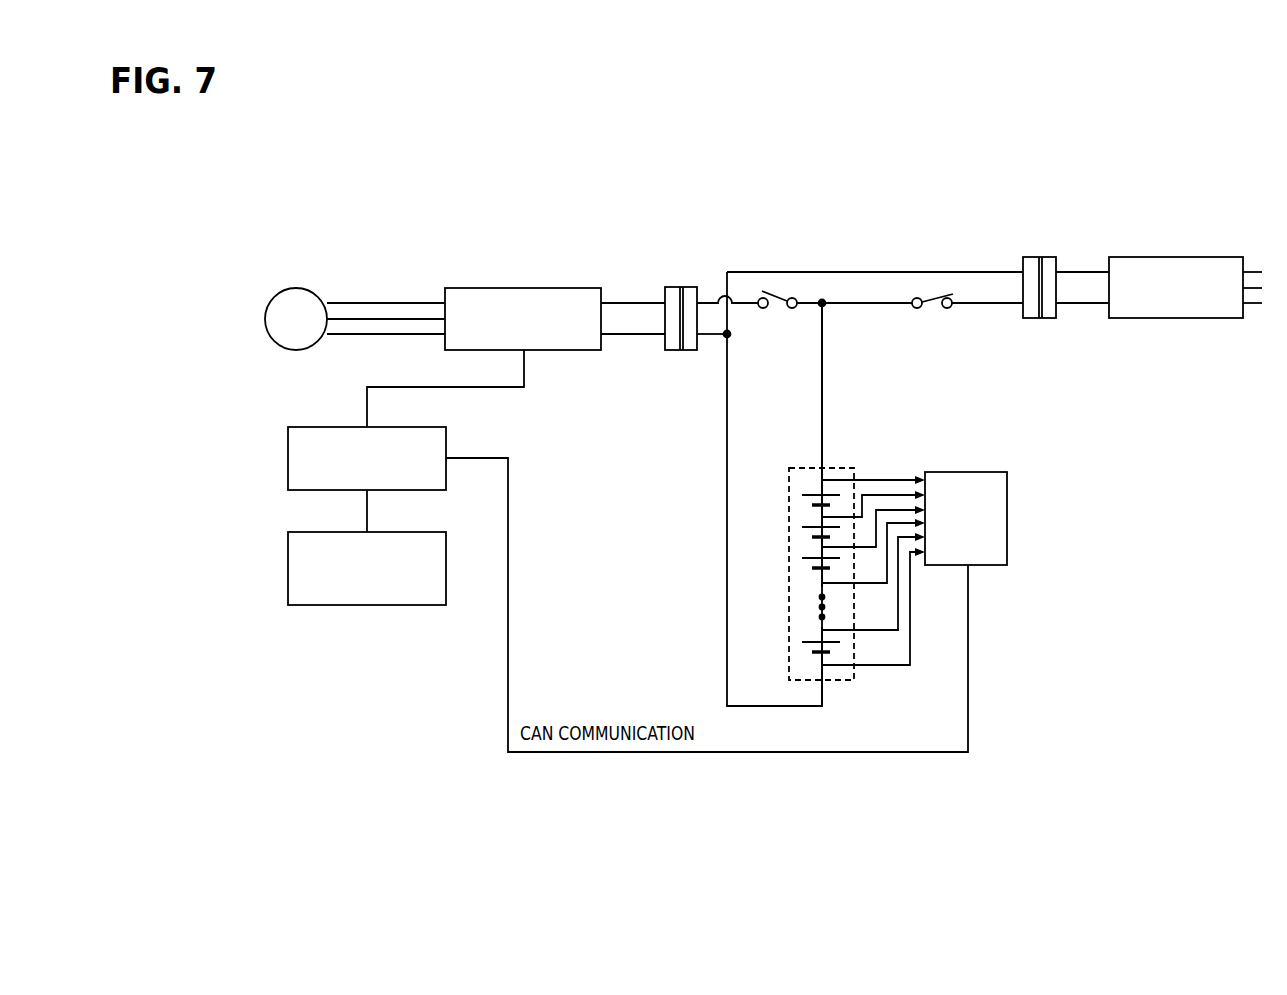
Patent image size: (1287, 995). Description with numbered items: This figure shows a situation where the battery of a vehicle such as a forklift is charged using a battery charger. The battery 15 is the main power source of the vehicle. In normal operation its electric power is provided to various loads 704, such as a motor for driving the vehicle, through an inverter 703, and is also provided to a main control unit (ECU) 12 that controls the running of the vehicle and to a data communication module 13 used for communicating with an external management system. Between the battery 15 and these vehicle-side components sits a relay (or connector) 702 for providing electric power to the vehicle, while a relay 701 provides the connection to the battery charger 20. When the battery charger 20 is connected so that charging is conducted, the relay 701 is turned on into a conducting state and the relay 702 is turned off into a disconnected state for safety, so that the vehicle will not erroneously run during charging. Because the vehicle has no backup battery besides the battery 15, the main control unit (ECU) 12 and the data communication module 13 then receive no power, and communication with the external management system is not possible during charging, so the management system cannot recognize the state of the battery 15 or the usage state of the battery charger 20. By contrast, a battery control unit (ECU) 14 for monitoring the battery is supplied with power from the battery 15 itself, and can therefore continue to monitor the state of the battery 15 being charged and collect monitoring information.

The loads 704 is at (360, 277).
The inverter 703 is at (488, 287).
The relay 702 is at (783, 313).
The relay 701 is at (935, 312).
The battery charger 20 is at (1167, 256).
The main control unit (ECU) 12 is at (288, 458).
The data communication module 13 is at (288, 563).
The battery 15 is at (789, 500).
The battery control unit (ECU) 14 is at (1007, 512).